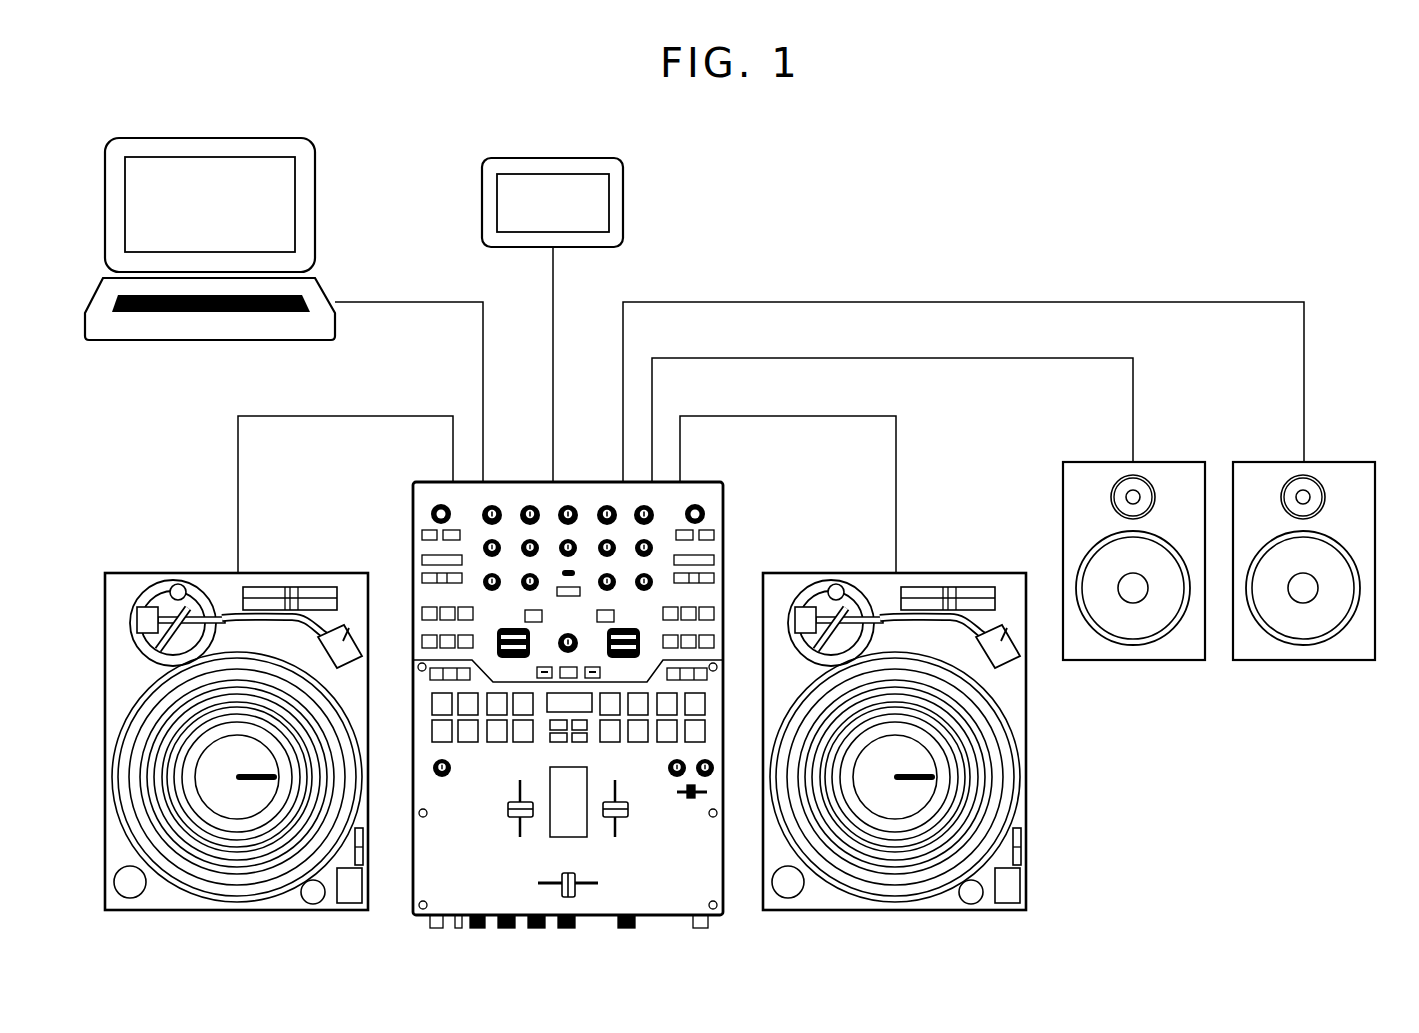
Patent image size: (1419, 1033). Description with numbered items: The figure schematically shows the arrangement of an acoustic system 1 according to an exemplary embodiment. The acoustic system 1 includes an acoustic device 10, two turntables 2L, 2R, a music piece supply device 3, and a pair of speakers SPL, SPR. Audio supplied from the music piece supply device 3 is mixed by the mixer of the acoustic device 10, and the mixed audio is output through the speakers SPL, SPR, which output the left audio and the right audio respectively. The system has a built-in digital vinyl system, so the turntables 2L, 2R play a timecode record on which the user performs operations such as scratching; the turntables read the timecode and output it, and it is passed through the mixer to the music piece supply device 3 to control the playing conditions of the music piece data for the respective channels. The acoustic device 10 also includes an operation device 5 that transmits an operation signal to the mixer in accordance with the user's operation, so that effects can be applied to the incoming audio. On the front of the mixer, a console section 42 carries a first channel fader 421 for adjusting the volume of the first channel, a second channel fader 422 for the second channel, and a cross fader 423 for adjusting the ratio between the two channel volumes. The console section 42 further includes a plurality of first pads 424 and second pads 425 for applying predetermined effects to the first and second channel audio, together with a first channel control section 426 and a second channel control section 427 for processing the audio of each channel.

The acoustic system 1 is at (1283, 168).
The music piece supply device 3 is at (258, 138).
The operation device 5 is at (578, 158).
The acoustic device 10 is at (723, 528).
The turntable 2L is at (307, 573).
The turntable 2R is at (965, 573).
The speaker SPL is at (1148, 660).
The speaker SPR is at (1318, 660).
The console section 42 is at (673, 500).
The first channel fader 421 is at (510, 817).
The second channel fader 422 is at (627, 815).
The cross fader 423 is at (575, 897).
The first pads 424 is at (472, 742).
The second pads 425 is at (663, 742).
The first channel control section 426 is at (518, 500).
The second channel control section 427 is at (622, 500).